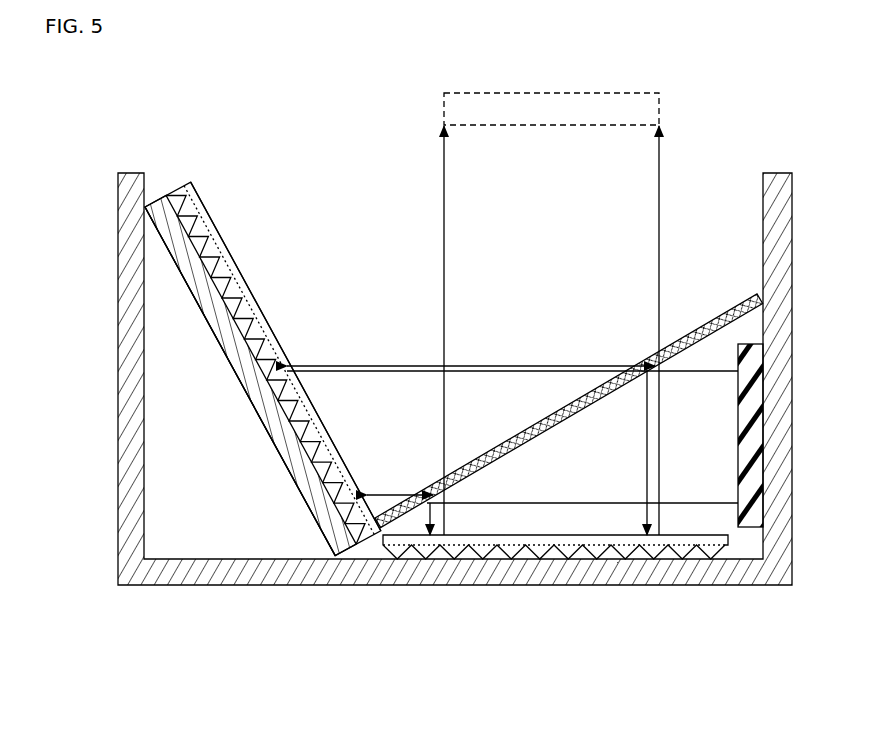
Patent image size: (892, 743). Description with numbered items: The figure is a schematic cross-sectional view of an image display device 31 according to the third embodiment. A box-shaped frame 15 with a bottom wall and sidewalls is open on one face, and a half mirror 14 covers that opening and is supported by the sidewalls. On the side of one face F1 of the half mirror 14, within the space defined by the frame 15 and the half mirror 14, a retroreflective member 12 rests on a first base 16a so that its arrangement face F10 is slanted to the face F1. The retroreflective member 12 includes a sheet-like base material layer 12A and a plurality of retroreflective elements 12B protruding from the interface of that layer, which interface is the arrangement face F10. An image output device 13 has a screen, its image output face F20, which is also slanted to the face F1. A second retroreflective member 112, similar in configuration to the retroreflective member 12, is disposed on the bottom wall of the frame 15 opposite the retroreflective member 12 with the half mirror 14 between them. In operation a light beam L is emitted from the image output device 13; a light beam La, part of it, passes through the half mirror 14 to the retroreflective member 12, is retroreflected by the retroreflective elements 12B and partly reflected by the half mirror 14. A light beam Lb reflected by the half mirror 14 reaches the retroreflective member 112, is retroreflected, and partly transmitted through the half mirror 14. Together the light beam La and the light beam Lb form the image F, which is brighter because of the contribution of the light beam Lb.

The image display device 31 is at (275, 115).
The retroreflective member 12 is at (263, 368).
The base material layer 12A is at (204, 220).
The retroreflective elements 12B is at (210, 248).
The arrangement face F10 is at (228, 268).
The frame 15 is at (118, 460).
The first base 16a is at (276, 447).
The half mirror 14 is at (672, 343).
The one face F1 is at (716, 345).
The image output device 13 is at (740, 458).
The image output face F20 is at (738, 447).
The second retroreflective member 112 is at (587, 541).
The image F is at (545, 93).
The light beam L is at (695, 373).
The light beam La is at (332, 372).
The light beam Lb is at (438, 526).